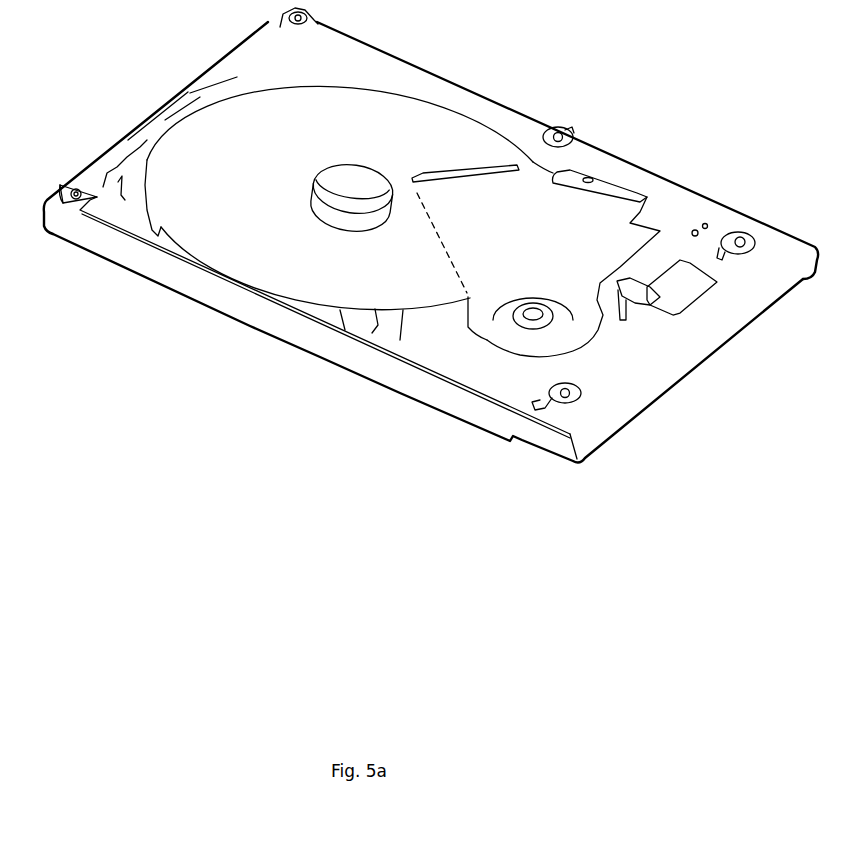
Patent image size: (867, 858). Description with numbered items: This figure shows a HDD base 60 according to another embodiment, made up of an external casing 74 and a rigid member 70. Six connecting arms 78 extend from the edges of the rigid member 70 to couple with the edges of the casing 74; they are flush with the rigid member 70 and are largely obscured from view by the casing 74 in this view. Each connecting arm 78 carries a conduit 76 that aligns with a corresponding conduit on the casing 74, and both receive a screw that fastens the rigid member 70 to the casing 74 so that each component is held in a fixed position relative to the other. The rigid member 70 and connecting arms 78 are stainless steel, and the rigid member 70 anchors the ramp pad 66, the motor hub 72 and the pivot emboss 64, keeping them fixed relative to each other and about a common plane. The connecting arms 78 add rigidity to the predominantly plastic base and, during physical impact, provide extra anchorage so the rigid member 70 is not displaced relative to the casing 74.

The HDD base 60 is at (431, 242).
The pivot emboss 64 is at (537, 320).
The ramp pad 66 is at (603, 183).
The rigid member 70 is at (456, 168).
The motor hub 72 is at (367, 165).
The external casing 74 is at (438, 407).
The conduit 76 is at (282, 17).
The connecting arms 78 is at (540, 367).